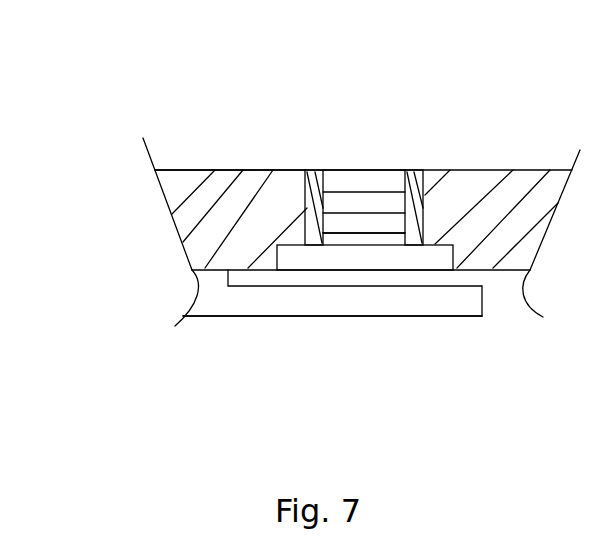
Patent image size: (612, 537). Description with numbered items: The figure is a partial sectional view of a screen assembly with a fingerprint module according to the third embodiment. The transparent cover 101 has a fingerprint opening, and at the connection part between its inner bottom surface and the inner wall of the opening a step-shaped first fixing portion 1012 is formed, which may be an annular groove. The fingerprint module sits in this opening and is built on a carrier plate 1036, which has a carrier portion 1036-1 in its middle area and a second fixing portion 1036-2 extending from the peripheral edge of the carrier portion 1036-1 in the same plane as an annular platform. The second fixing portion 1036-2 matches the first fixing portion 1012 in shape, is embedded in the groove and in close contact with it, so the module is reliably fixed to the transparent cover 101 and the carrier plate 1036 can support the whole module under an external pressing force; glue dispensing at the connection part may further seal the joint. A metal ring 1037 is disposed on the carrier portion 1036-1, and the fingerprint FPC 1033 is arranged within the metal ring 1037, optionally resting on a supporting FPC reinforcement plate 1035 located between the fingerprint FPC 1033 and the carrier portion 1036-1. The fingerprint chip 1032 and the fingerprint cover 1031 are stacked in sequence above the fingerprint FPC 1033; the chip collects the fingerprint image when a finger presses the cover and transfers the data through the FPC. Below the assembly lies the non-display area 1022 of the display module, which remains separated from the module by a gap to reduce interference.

The transparent cover 101 is at (168, 185).
The first fixing portion 1012 is at (277, 257).
The non-display area 1022 is at (247, 298).
The fingerprint cover 1031 is at (353, 175).
The fingerprint chip 1032 is at (393, 200).
The fingerprint FPC 1033 is at (405, 237).
The FPC reinforcement plate 1035 is at (335, 237).
The carrier plate 1036 is at (364, 345).
The carrier portion 1036-1 is at (340, 257).
The second fixing portion 1036-2 is at (287, 257).
The metal ring 1037 is at (283, 191).